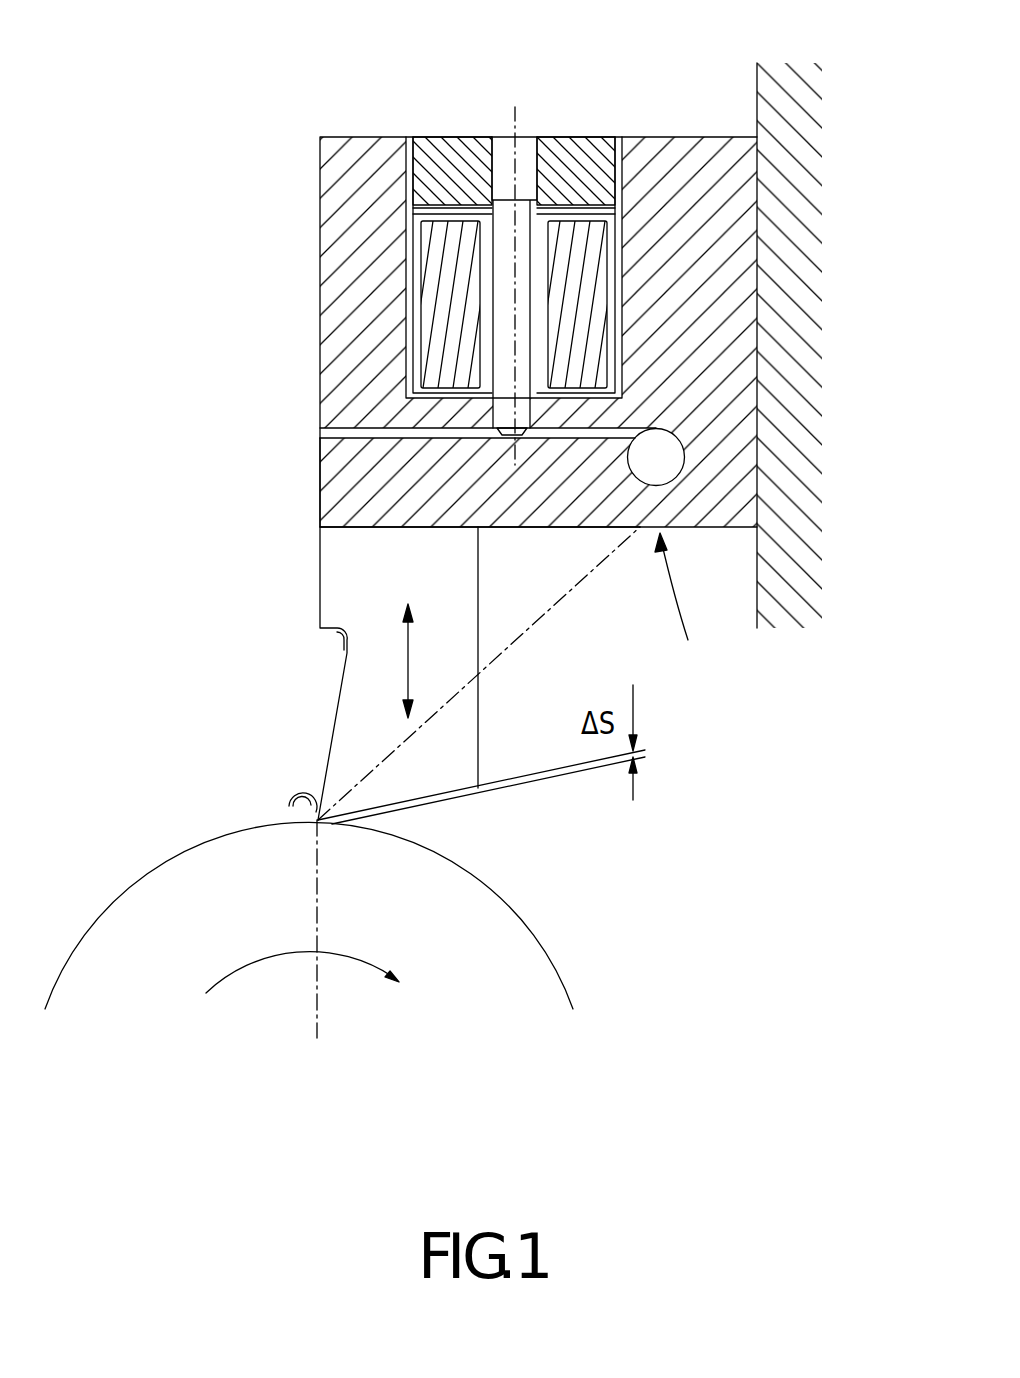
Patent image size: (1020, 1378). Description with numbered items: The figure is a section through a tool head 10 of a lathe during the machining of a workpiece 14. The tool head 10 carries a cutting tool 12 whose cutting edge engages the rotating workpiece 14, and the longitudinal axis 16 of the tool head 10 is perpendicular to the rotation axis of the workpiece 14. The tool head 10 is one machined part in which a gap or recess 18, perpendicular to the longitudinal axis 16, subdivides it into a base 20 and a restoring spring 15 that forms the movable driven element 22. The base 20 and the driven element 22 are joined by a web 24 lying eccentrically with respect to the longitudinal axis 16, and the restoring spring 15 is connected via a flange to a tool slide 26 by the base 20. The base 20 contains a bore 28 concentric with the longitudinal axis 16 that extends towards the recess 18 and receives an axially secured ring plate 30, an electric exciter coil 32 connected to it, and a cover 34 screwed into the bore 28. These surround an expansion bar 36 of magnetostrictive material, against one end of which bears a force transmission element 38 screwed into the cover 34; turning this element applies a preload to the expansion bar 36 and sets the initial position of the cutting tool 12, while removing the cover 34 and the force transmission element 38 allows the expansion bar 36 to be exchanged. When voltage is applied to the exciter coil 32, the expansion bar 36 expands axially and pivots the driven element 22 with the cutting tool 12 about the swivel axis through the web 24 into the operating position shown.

The tool head 10 is at (210, 552).
The cutting tool 12 is at (358, 733).
The workpiece 14 is at (240, 860).
The restoring spring 15 is at (682, 614).
The longitudinal axis 16 is at (515, 107).
The recess 18 is at (370, 430).
The base 20 is at (720, 168).
The driven element 22 is at (340, 490).
The web 24 is at (717, 458).
The tool slide 26 is at (795, 432).
The bore 28 is at (445, 387).
The ring plate 30 is at (572, 210).
The exciter coil 32 is at (445, 299).
The cover 34 is at (598, 140).
The expansion bar 36 is at (502, 280).
The force transmission element 38 is at (500, 162).